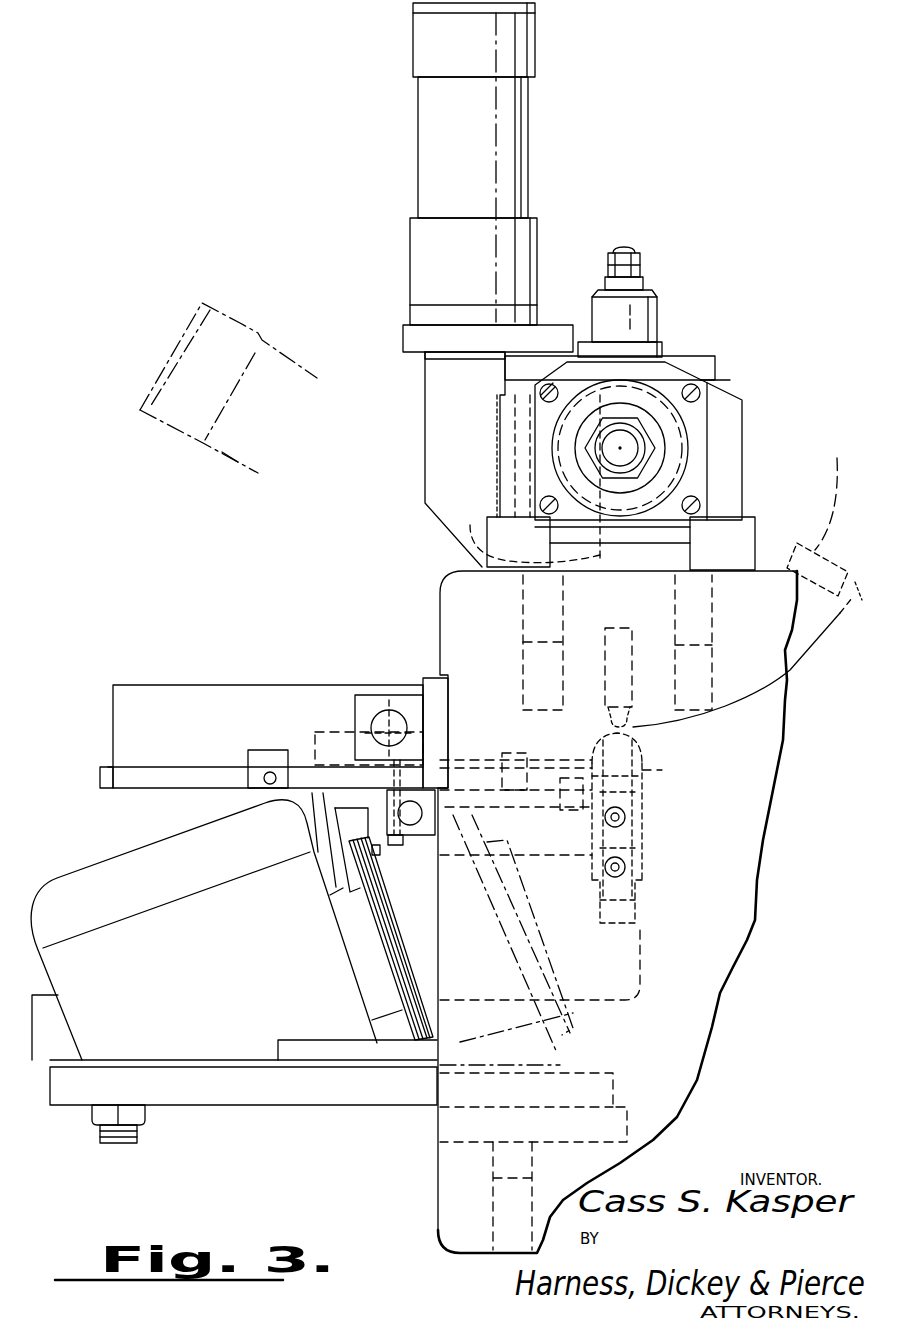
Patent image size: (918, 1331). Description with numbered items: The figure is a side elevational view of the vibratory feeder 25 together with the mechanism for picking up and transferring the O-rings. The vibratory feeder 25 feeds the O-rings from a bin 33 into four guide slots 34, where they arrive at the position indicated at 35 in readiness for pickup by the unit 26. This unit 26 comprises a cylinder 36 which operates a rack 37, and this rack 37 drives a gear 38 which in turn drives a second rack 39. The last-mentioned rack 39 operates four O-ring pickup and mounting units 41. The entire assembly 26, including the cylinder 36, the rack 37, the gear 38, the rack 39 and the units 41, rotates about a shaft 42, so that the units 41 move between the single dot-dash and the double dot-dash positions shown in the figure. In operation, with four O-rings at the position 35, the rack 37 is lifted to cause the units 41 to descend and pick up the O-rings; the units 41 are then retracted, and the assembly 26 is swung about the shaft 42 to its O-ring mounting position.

The vibratory feeder 25 is at (258, 968).
The pickup unit 26 is at (408, 455).
The bin 33 is at (197, 692).
The guide slots 34 is at (478, 762).
The pickup position 35 is at (650, 773).
The cylinder 36 is at (512, 123).
The rack 37 is at (440, 480).
The gear 38 is at (450, 540).
The rack 39 is at (590, 574).
The O-ring pickup and mounting units 41 is at (835, 452).
The shaft 42 is at (622, 448).